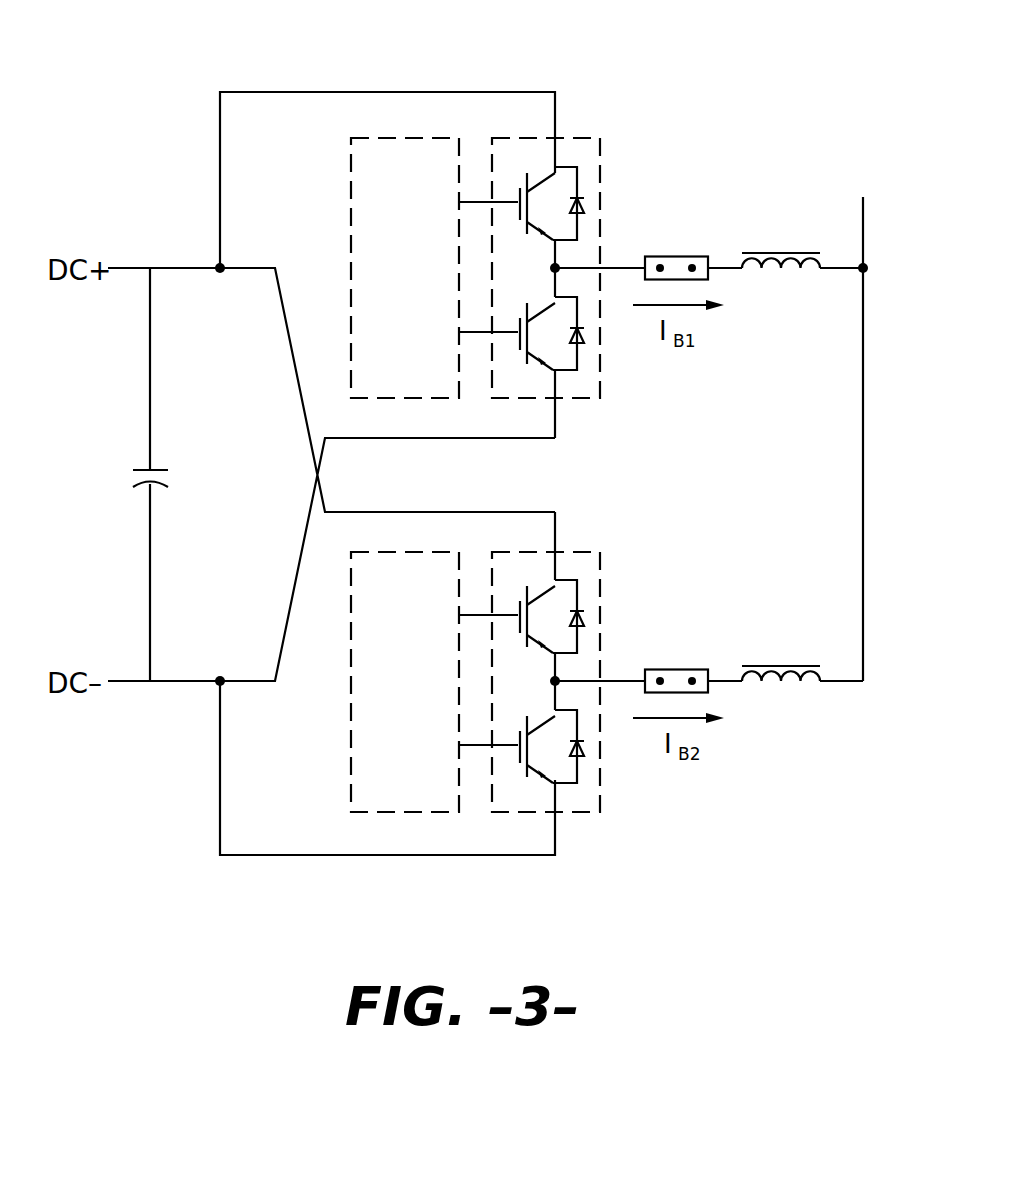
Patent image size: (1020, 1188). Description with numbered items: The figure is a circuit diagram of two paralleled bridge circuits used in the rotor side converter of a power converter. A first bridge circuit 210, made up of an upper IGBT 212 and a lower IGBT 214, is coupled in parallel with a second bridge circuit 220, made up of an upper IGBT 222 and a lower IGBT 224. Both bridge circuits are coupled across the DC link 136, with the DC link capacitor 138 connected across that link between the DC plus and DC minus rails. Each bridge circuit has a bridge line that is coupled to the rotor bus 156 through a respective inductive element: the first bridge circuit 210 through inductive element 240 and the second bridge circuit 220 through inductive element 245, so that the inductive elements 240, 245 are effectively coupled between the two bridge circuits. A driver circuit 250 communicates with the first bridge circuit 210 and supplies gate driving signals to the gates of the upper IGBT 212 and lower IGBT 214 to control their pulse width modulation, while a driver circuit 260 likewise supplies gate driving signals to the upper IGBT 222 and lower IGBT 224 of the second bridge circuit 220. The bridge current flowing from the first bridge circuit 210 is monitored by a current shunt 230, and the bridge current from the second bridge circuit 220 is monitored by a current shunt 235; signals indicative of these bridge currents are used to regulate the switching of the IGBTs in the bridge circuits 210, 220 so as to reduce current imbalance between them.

The DC link 136 is at (180, 266).
The DC link capacitor 138 is at (162, 470).
The rotor bus 156 is at (862, 458).
The first bridge circuit 210 is at (602, 145).
The upper IGBT 212 is at (578, 182).
The lower IGBT 214 is at (590, 352).
The second bridge circuit 220 is at (602, 558).
The upper IGBT 222 is at (578, 595).
The lower IGBT 224 is at (590, 765).
The current shunt 230 is at (672, 256).
The current shunt 235 is at (674, 669).
The inductive element 240 is at (800, 270).
The inductive element 245 is at (802, 683).
The driver circuit 250 is at (405, 138).
The driver circuit 260 is at (405, 812).